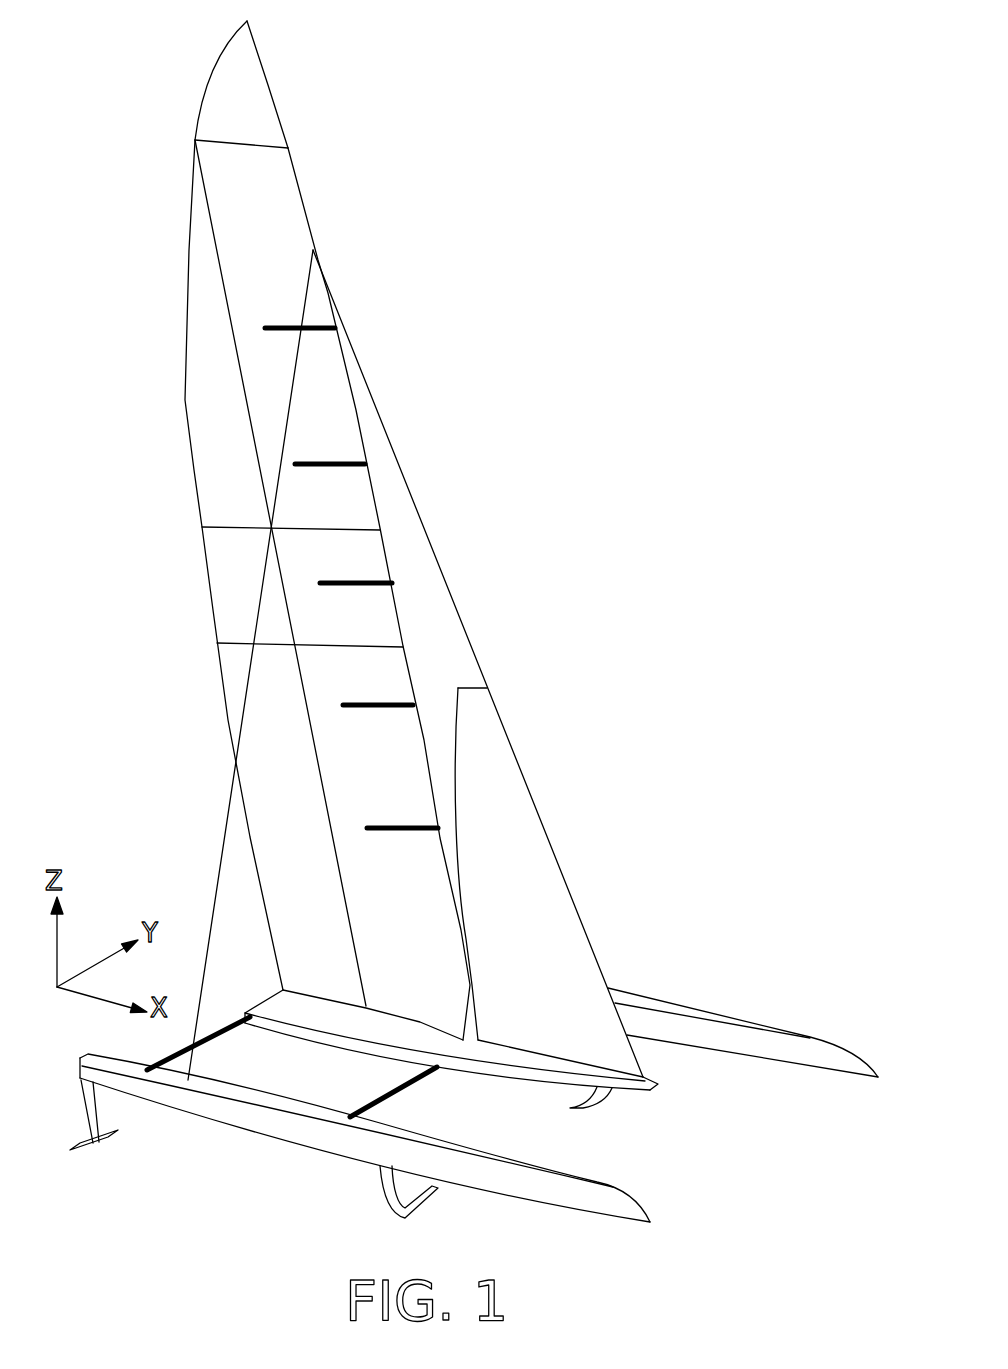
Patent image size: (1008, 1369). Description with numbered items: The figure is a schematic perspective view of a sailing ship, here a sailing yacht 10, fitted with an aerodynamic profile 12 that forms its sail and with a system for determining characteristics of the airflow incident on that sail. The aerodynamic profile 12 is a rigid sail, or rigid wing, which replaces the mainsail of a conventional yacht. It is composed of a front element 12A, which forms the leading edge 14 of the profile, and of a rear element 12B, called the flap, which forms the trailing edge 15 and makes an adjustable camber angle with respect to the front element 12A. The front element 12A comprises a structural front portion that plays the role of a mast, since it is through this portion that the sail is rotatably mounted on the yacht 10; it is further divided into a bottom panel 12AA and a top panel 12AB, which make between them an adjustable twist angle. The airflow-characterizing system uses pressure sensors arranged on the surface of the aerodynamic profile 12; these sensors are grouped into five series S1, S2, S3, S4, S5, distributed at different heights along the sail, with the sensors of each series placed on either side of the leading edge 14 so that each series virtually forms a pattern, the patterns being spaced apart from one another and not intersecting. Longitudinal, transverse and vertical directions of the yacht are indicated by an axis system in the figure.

The sailing ship or yacht 10 is at (640, 360).
The aerodynamic profile 12 is at (302, 530).
The front element 12A is at (366, 530).
The bottom panel 12AA is at (257, 190).
The top panel 12AB is at (243, 85).
The rear element 12B is at (216, 513).
The leading edge 14 is at (378, 507).
The trailing edge 15 is at (207, 570).
The first series of pressure sensors S1 is at (323, 323).
The second series of pressure sensors S2 is at (328, 460).
The third series of pressure sensors S3 is at (358, 577).
The fourth series of pressure sensors S4 is at (377, 702).
The fifth series of pressure sensors S5 is at (400, 827).